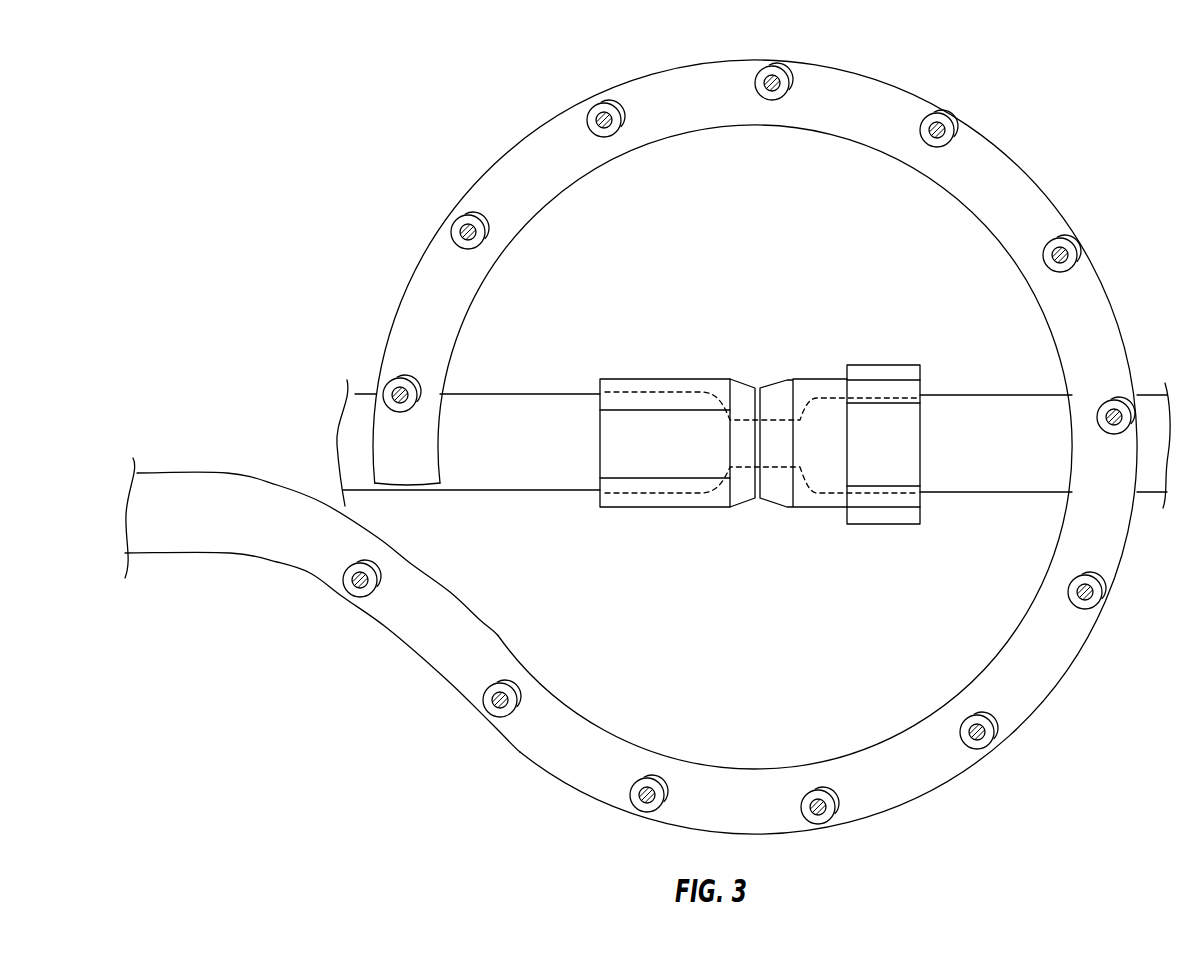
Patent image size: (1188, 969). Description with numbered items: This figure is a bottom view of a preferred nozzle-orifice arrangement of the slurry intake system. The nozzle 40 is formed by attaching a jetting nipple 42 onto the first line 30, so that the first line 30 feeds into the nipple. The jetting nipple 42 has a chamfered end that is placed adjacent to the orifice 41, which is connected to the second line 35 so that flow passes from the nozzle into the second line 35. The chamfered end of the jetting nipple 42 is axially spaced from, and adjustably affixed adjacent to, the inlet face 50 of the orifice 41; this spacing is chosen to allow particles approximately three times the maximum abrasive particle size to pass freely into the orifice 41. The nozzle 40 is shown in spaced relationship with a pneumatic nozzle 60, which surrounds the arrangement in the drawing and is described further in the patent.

The first line 30 is at (490, 458).
The second line 35 is at (1039, 456).
The nozzle 40 is at (858, 566).
The orifice 41 is at (881, 352).
The jetting nipple 42 is at (680, 457).
The inlet face 50 is at (775, 500).
The pneumatic nozzle 60 is at (938, 777).